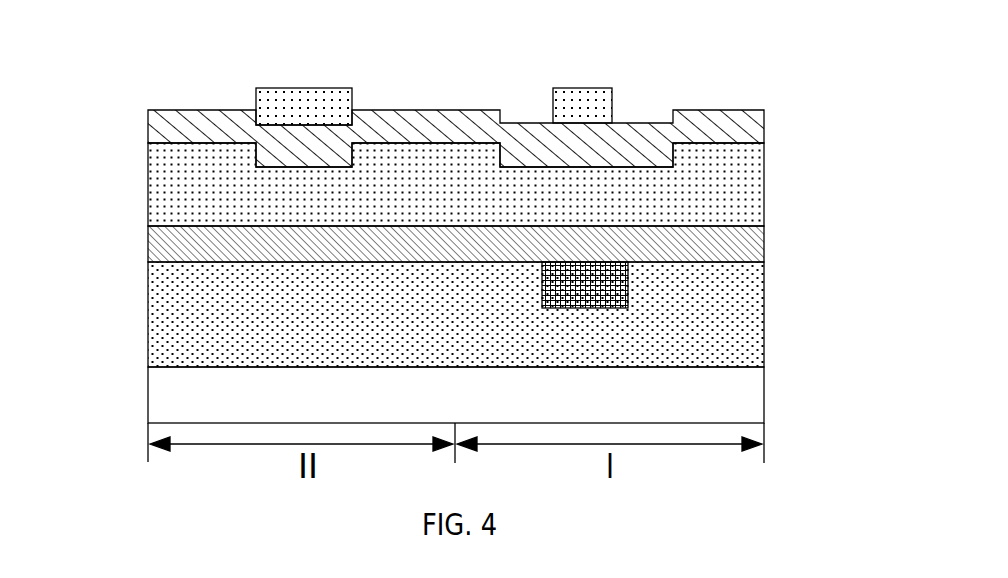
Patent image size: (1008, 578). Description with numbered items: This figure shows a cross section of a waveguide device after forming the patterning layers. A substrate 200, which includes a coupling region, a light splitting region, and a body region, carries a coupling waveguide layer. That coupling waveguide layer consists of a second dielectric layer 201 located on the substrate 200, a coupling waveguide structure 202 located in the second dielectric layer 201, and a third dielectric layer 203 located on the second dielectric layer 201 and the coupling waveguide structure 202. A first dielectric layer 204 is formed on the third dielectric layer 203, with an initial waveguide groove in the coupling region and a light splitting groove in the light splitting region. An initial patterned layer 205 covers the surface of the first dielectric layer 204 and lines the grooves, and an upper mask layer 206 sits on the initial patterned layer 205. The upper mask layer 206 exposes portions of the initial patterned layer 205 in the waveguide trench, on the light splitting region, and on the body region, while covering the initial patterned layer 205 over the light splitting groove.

The substrate 200 is at (738, 412).
The second dielectric layer 201 is at (172, 333).
The coupling waveguide structure 202 is at (610, 293).
The third dielectric layer 203 is at (728, 248).
The first dielectric layer 204 is at (717, 192).
The initial patterned layer 205 is at (742, 137).
The upper mask layer 206 is at (600, 93).